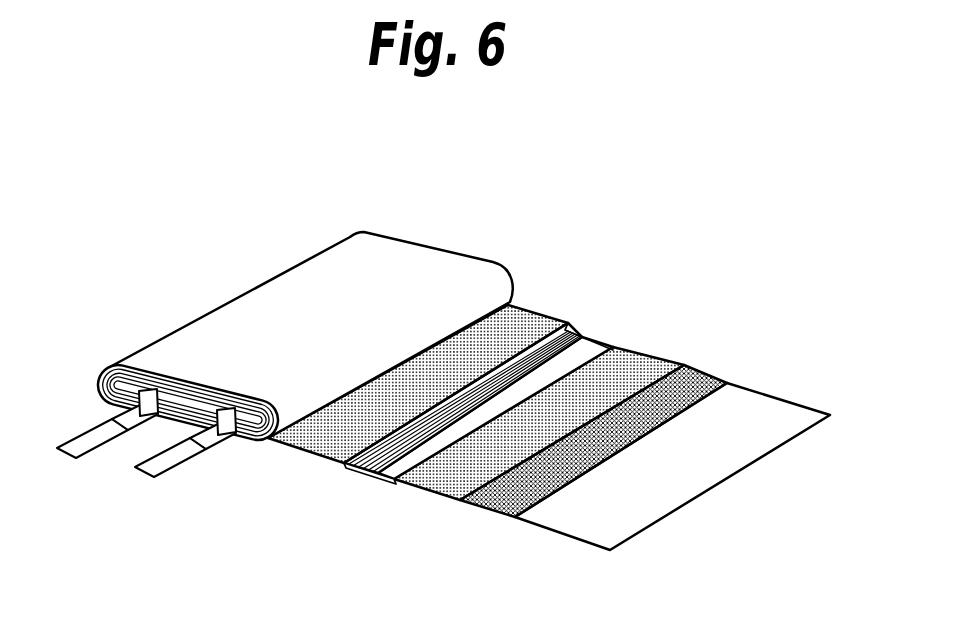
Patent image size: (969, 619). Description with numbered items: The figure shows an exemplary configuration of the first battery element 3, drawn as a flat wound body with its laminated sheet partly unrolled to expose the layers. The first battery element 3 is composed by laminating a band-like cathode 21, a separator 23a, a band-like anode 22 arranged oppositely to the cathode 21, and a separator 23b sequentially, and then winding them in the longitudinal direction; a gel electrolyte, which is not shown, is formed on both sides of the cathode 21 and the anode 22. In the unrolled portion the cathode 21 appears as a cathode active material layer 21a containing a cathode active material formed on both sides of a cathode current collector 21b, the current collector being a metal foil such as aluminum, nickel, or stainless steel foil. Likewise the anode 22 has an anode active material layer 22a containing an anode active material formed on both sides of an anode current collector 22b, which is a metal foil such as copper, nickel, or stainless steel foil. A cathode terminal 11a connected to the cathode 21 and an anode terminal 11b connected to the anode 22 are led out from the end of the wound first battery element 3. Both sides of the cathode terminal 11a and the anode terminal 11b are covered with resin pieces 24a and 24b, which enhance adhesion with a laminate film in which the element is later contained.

The first battery element 3 is at (413, 141).
The cathode terminal 11a is at (147, 474).
The anode terminal 11b is at (58, 455).
The resin piece 24a is at (207, 452).
The resin piece 24b is at (128, 431).
The cathode 21 is at (601, 488).
The cathode active material layer 21a is at (500, 513).
The cathode current collector 21b is at (530, 522).
The anode 22 is at (425, 445).
The anode active material layer 22a is at (345, 467).
The anode current collector 22b is at (393, 482).
The separator 23a is at (640, 360).
The separator 23b is at (527, 317).